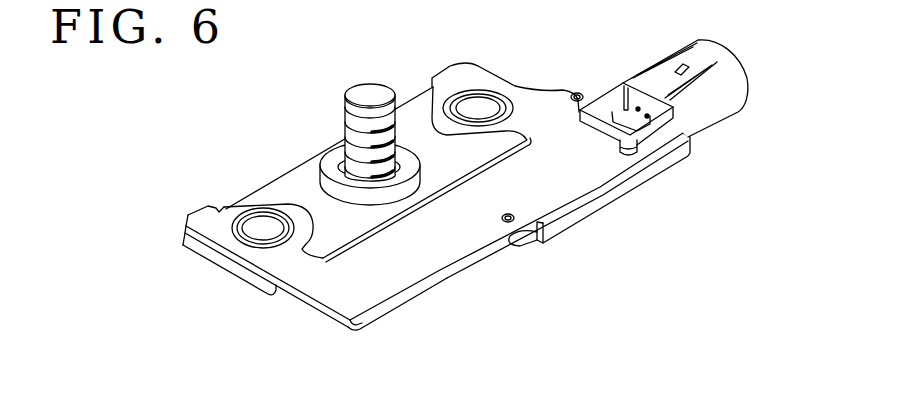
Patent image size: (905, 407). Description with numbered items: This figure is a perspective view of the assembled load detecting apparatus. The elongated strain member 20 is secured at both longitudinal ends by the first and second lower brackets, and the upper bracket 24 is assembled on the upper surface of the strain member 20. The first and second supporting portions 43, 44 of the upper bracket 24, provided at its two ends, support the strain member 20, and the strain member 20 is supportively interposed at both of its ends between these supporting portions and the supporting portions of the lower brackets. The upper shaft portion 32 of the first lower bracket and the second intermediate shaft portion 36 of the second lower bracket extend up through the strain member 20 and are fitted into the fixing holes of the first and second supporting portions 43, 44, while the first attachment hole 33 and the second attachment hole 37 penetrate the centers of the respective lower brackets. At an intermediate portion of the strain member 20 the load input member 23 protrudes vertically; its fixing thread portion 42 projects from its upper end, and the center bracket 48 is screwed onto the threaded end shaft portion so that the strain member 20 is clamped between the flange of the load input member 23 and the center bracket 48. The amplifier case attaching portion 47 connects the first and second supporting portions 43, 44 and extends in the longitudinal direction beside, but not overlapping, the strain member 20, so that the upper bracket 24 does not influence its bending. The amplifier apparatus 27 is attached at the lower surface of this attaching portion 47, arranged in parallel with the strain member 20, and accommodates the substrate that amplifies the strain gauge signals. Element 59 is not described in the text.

The strain member 20 is at (410, 110).
The load input member 23 is at (368, 88).
The upper bracket 24 is at (344, 326).
The amplifier apparatus 27 is at (580, 210).
The upper shaft portion 32 is at (245, 240).
The first attachment hole 33 is at (265, 227).
The second intermediate shaft portion 36 is at (493, 93).
The second attachment hole 37 is at (477, 102).
The fixing thread portion 42 is at (343, 116).
The first supporting portion 43 is at (207, 218).
The second supporting portion 44 is at (457, 73).
The amplifier case attaching portion 47 is at (477, 232).
The center bracket 48 is at (327, 164).
The connector 59 is at (713, 107).